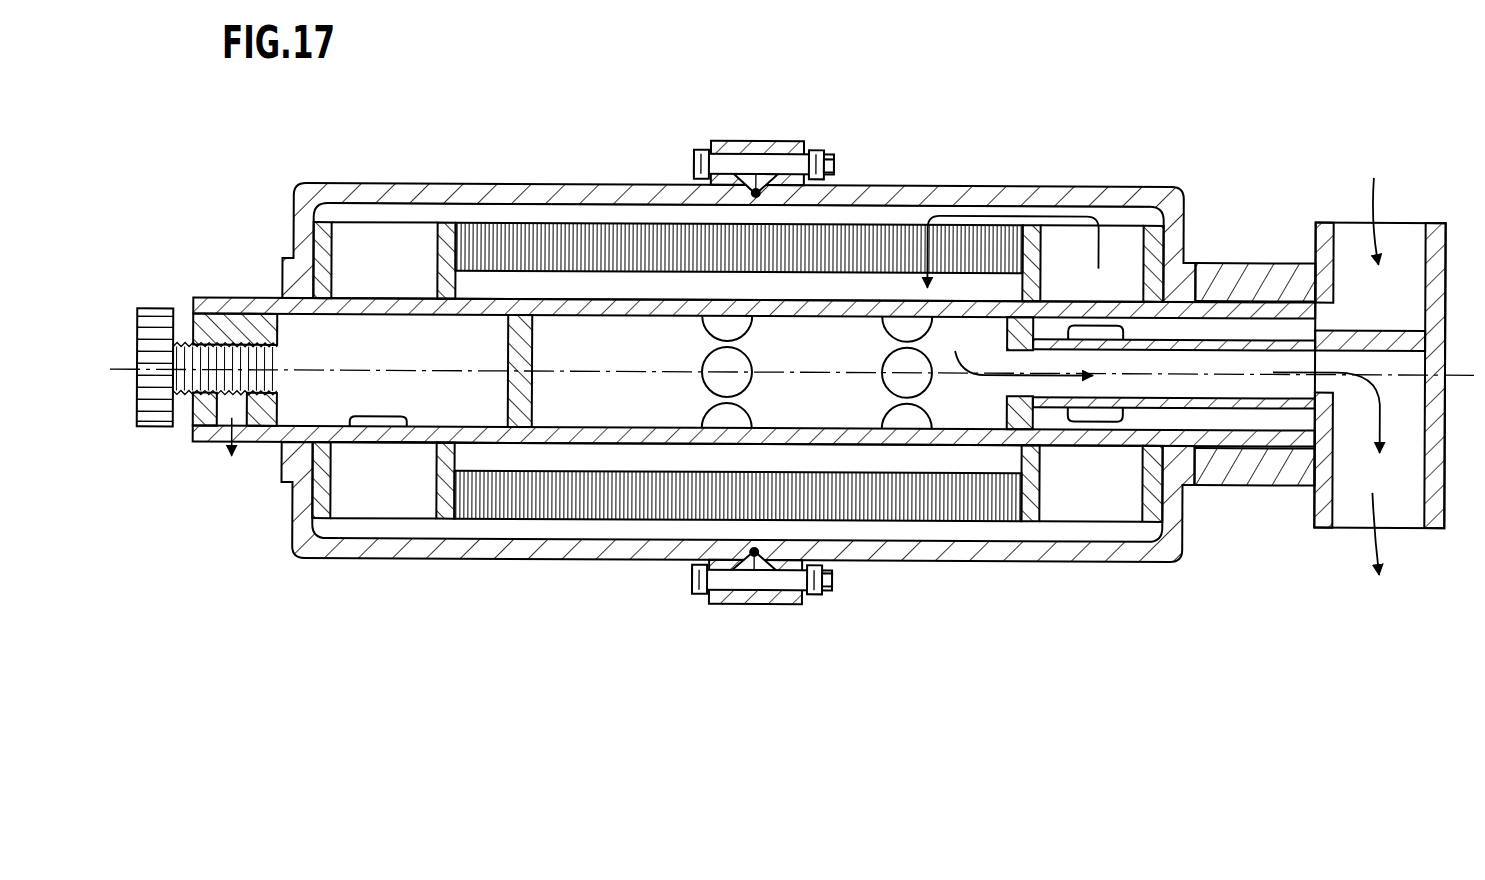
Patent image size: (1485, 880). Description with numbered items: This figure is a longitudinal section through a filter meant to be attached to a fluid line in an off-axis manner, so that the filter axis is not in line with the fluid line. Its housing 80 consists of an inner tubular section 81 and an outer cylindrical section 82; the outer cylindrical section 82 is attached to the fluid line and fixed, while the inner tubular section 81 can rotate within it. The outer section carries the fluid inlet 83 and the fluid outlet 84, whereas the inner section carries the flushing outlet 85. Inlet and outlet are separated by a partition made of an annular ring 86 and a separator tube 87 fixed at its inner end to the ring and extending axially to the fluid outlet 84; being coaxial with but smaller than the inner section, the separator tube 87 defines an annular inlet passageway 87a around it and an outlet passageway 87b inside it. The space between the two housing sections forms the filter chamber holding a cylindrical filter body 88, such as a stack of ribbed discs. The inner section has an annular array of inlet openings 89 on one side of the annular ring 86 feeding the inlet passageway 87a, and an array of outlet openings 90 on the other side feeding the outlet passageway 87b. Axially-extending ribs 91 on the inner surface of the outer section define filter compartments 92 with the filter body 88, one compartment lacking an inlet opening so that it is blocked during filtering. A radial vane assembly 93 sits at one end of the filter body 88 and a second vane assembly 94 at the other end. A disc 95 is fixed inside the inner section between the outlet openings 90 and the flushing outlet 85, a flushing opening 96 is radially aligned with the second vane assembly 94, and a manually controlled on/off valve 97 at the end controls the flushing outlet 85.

The housing 80 is at (566, 181).
The inner tubular section 81 is at (242, 308).
The outer cylindrical section 82 is at (470, 183).
The fluid inlet 83 is at (1392, 220).
The fluid outlet 84 is at (1358, 528).
The flushing outlet 85 is at (243, 422).
The annular ring 86 is at (1003, 420).
The separator tube 87 is at (1232, 407).
The inlet passageway 87a is at (1263, 328).
The outlet passageway 87b is at (1272, 383).
The filter body 88 is at (623, 220).
The inlet openings 89 is at (1098, 418).
The outlet openings 90 is at (884, 322).
The axially-extending ribs 91 is at (865, 218).
The filter compartments 92 is at (922, 212).
The radial vane assembly 93 is at (1113, 221).
The second vane assembly 94 is at (400, 218).
The disc 95 is at (532, 348).
The flushing opening 96 is at (367, 416).
The on/off valve 97 is at (157, 422).